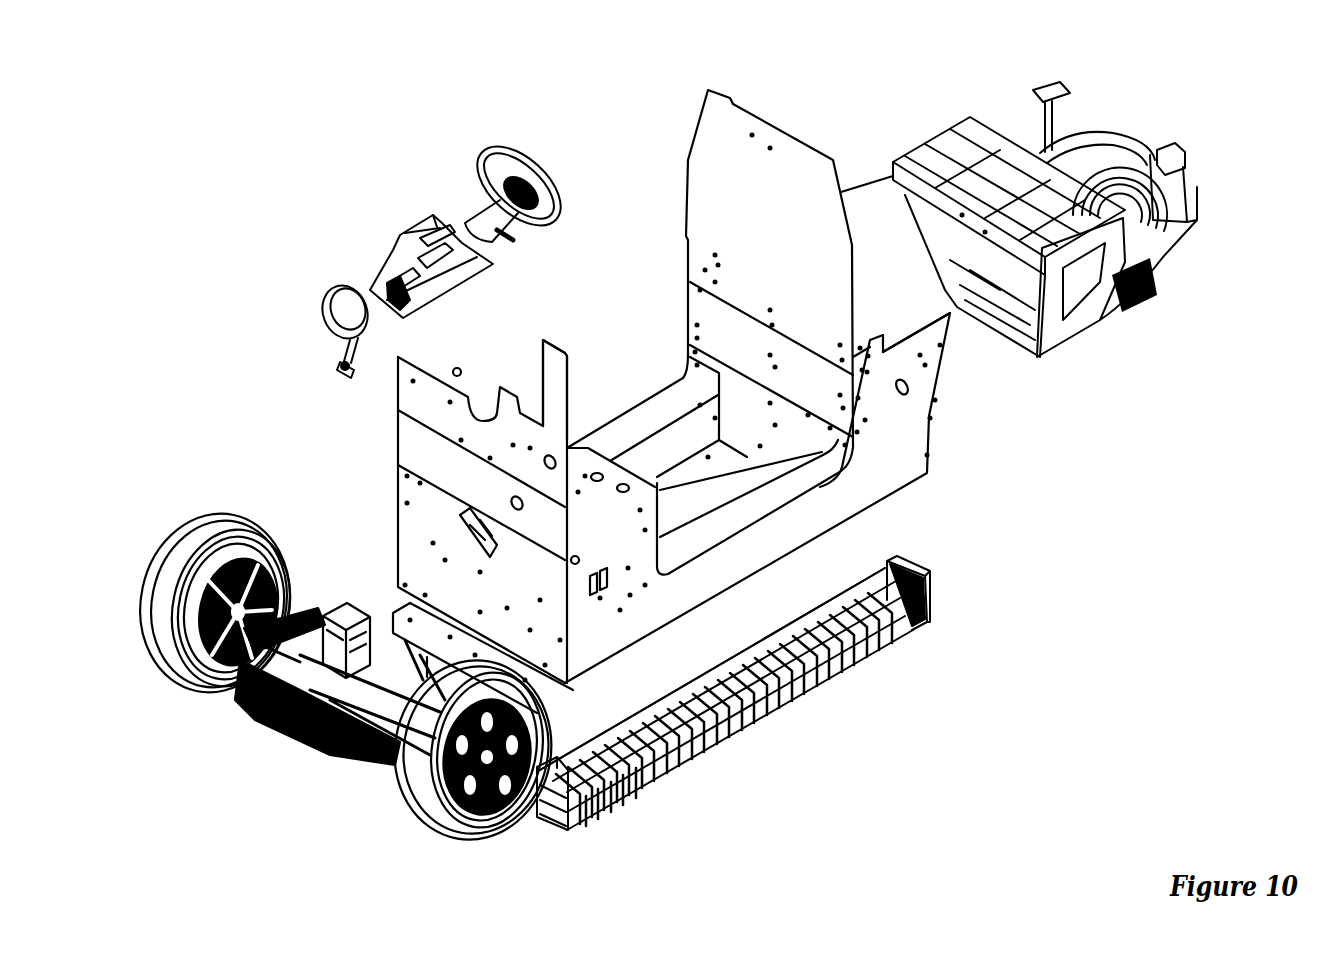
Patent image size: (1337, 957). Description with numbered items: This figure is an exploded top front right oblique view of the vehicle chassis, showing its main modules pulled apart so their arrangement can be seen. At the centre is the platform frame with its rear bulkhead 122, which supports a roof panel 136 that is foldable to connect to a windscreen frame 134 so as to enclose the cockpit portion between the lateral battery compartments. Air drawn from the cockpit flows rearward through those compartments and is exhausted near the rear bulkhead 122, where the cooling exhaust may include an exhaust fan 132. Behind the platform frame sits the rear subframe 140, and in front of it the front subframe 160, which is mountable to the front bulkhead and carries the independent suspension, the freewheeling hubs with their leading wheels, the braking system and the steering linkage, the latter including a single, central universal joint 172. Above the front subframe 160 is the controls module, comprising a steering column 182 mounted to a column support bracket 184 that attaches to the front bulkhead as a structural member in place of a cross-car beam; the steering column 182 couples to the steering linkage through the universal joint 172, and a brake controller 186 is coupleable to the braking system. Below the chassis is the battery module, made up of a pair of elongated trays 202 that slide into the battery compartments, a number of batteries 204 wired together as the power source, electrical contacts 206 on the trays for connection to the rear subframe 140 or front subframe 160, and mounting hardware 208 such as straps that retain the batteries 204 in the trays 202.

The rear bulkhead 122 is at (927, 272).
The exhaust fan 132 is at (935, 597).
The windscreen frame 134 is at (548, 328).
The roof panel 136 is at (723, 82).
The rear subframe 140 is at (922, 125).
The front subframe 160 is at (305, 748).
The universal joint 172 is at (317, 612).
The steering column 182 is at (467, 198).
The column support bracket 184 is at (383, 218).
The brake controller 186 is at (323, 293).
The elongated trays 202 is at (723, 755).
The batteries 204 is at (867, 672).
The electrical contacts 206 is at (538, 833).
The mounting hardware 208 is at (808, 700).